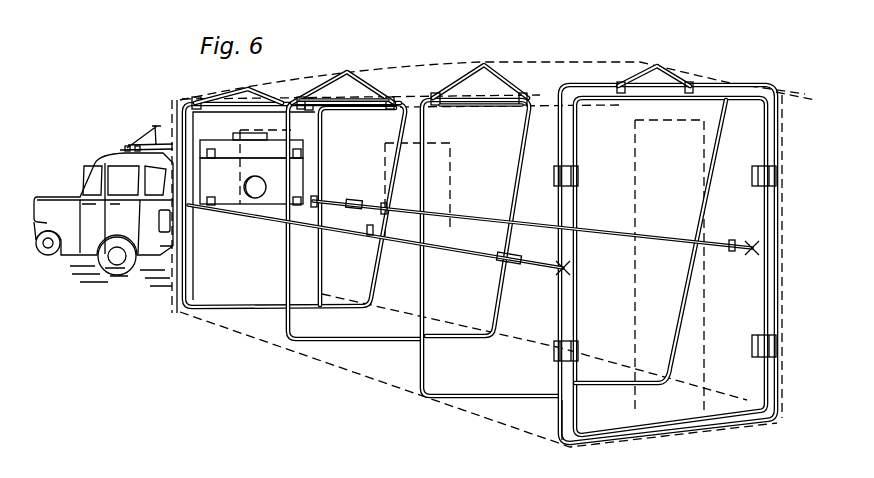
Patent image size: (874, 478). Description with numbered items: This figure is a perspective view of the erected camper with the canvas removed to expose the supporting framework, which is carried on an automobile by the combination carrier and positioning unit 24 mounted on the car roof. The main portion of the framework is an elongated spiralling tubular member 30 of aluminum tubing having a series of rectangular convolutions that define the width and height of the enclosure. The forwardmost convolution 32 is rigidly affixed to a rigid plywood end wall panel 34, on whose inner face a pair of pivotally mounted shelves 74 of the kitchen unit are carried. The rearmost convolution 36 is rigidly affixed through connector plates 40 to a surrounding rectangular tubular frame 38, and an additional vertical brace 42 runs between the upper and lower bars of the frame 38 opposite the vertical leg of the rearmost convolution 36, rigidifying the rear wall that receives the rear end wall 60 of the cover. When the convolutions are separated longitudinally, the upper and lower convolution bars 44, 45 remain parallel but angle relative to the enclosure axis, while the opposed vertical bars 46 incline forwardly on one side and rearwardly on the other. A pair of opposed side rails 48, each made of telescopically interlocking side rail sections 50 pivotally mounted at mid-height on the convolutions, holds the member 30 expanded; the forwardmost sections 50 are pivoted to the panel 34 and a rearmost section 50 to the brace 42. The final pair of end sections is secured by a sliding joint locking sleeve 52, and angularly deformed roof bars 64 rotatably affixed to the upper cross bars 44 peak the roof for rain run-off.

The combination carrier and positioning unit 24 is at (127, 128).
The elongated spiralling tubular member 30 is at (283, 333).
The forwardmost convolution 32 is at (323, 157).
The end wall panel 34 is at (219, 296).
The rearmost convolution 36 is at (578, 331).
The rectangular tubular frame 38 is at (558, 399).
The connector plates 40 is at (566, 177).
The vertical brace 42 is at (756, 307).
The upper convolution bar 44 is at (465, 106).
The lower convolution bar 45 is at (326, 339).
The vertical bars 46 is at (517, 184).
The side rails 48 is at (483, 222).
The side rail sections 50 is at (318, 200).
The sliding joint locking sleeve 52 is at (358, 202).
The rear end wall 60 is at (737, 159).
The roof bars 64 is at (489, 67).
The shelves 74 is at (233, 188).